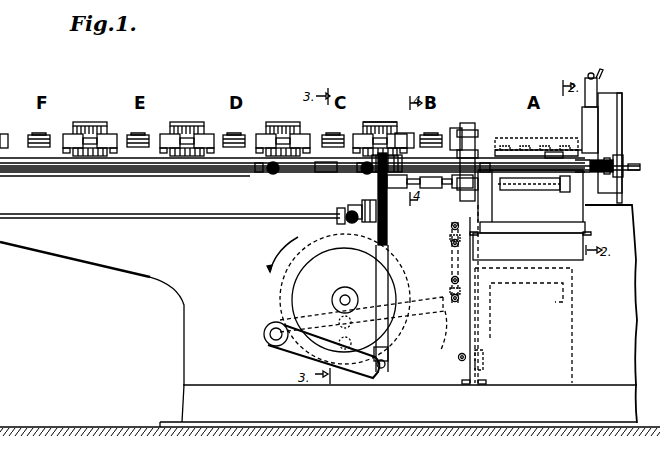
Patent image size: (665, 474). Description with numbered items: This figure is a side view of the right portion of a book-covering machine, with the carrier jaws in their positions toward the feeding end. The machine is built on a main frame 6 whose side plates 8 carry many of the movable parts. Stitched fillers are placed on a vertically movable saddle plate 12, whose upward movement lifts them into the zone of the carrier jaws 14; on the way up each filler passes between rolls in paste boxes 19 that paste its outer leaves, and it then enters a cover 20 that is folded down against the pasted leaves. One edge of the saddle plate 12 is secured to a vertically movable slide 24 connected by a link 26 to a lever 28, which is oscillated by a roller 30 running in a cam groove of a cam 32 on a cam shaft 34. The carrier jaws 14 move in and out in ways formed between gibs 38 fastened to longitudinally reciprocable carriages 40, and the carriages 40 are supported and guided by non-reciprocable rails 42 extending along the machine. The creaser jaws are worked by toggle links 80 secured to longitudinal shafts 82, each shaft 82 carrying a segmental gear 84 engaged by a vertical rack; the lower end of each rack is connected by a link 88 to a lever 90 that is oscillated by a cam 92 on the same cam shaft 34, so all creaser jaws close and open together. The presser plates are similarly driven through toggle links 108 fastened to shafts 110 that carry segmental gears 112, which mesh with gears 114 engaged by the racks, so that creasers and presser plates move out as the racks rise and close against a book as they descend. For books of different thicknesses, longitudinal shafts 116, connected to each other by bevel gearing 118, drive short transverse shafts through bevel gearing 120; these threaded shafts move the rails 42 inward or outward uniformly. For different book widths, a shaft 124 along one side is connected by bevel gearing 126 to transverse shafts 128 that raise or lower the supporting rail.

The main frame 6 is at (196, 317).
The side plates 8 is at (55, 250).
The saddle plate 12 is at (570, 290).
The carrier jaws 14 is at (510, 150).
The paste boxes 19 is at (512, 234).
The cover 20 is at (503, 142).
The vertically movable slide 24 is at (485, 362).
The link 26 is at (450, 259).
The lever 28 is at (443, 356).
The roller 30 is at (343, 312).
The cam 32 is at (403, 294).
The cam shaft 34 is at (345, 292).
The gibs 38 is at (548, 182).
The carriages 40 is at (63, 158).
The rails 42 is at (238, 172).
The toggle links 80 is at (346, 134).
The shafts 82 is at (452, 138).
The segmental gear 84 is at (424, 136).
The link 88 is at (378, 335).
The lever 90 is at (370, 375).
The cam 92 is at (360, 343).
The toggle links 108 is at (428, 188).
The shafts 110 is at (444, 188).
The segmental gears 112 is at (376, 180).
The gears 114 is at (390, 220).
The shafts 116 is at (98, 167).
The bevel gearing 118 is at (611, 176).
The bevel gearing 120 is at (270, 176).
The shaft 124 is at (143, 220).
The bevel gearing 126 is at (345, 221).
The transverse shafts 128 is at (356, 212).